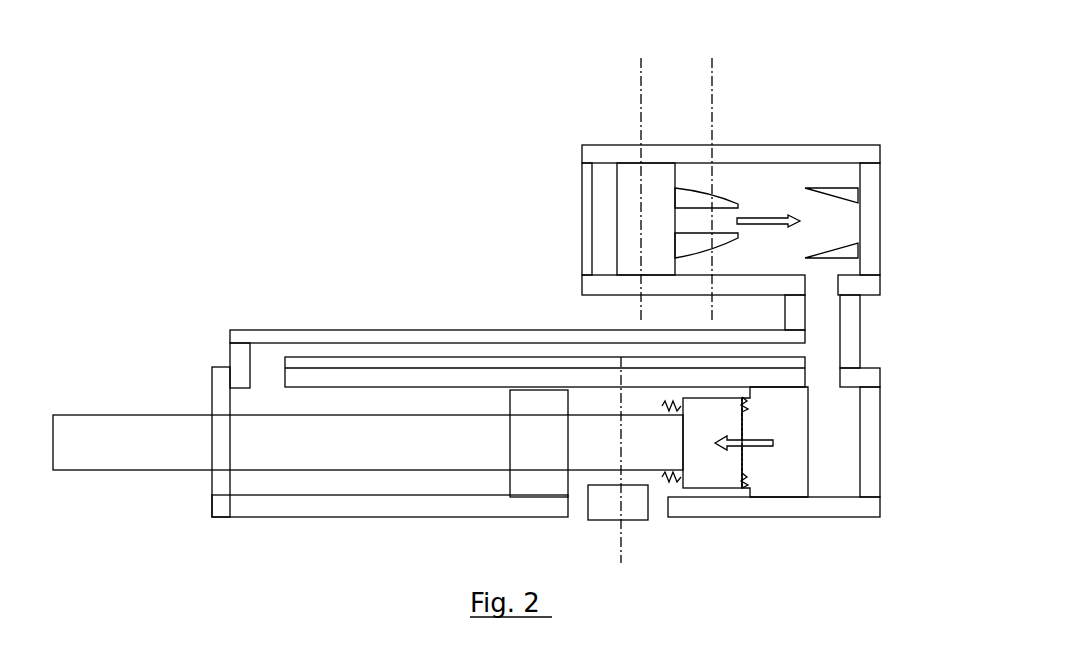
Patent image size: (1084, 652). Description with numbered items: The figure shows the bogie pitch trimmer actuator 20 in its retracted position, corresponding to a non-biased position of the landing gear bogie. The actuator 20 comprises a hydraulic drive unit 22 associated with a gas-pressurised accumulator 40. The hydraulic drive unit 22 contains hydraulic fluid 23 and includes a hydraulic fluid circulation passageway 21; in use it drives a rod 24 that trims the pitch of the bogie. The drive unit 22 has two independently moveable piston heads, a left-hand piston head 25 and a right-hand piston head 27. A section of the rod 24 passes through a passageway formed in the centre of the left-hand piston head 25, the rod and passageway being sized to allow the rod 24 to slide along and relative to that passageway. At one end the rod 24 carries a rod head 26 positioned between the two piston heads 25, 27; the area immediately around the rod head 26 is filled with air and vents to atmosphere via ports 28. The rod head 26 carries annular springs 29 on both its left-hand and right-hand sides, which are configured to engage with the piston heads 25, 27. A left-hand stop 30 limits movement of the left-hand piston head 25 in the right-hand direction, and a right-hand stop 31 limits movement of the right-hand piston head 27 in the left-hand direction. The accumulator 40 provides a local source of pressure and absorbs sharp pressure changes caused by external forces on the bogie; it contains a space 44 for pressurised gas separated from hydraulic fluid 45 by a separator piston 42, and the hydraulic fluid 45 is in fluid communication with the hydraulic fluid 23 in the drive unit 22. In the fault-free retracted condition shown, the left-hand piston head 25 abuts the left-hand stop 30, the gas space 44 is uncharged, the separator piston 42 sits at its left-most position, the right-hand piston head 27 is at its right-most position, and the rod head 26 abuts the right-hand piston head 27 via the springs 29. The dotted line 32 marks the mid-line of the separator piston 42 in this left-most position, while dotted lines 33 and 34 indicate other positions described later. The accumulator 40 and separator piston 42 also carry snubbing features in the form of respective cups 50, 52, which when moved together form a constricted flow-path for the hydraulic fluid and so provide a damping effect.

The bogie pitch trimmer actuator 20 is at (370, 216).
The hydraulic fluid circulation passageway 21 is at (340, 343).
The hydraulic drive unit 22 is at (256, 524).
The hydraulic fluid 23 is at (353, 483).
The rod 24 is at (145, 435).
The left-hand piston head 25 is at (524, 400).
The rod head 26 is at (721, 484).
The right-hand piston head 27 is at (782, 488).
The ports 28 is at (580, 512).
The annular springs 29 is at (668, 403).
The left-hand stop 30 is at (567, 388).
The right-hand stop 31 is at (674, 391).
The dotted line 32 is at (637, 178).
The dotted line 33 is at (709, 178).
The dotted line 34 is at (614, 545).
The accumulator 40 is at (763, 138).
The separator piston 42 is at (627, 173).
The space 44 is at (603, 219).
The hydraulic fluid 45 is at (782, 187).
The cup 50 is at (692, 196).
The cup 52 is at (840, 192).